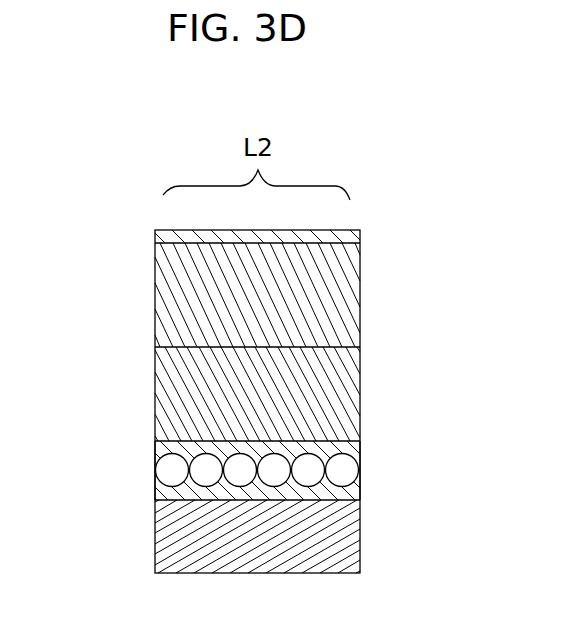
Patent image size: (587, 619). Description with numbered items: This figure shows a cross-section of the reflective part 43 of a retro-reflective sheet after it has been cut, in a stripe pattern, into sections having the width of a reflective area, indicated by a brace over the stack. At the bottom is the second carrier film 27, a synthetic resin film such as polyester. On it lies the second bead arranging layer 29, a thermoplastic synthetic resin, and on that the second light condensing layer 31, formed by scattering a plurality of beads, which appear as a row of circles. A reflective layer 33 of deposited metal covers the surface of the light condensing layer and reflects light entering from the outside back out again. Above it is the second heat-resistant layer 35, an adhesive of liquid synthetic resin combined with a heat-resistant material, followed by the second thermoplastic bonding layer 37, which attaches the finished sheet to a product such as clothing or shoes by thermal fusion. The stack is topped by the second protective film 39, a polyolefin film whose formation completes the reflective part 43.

The reflective part 43 is at (387, 193).
The second protective film 39 is at (360, 233).
The second thermoplastic bonding layer 37 is at (360, 288).
The second heat-resistant layer 35 is at (360, 378).
The reflective layer 33 is at (360, 448).
The second light condensing layer 31 is at (360, 494).
The second bead arranging layer 29 is at (155, 489).
The second carrier film 27 is at (155, 543).